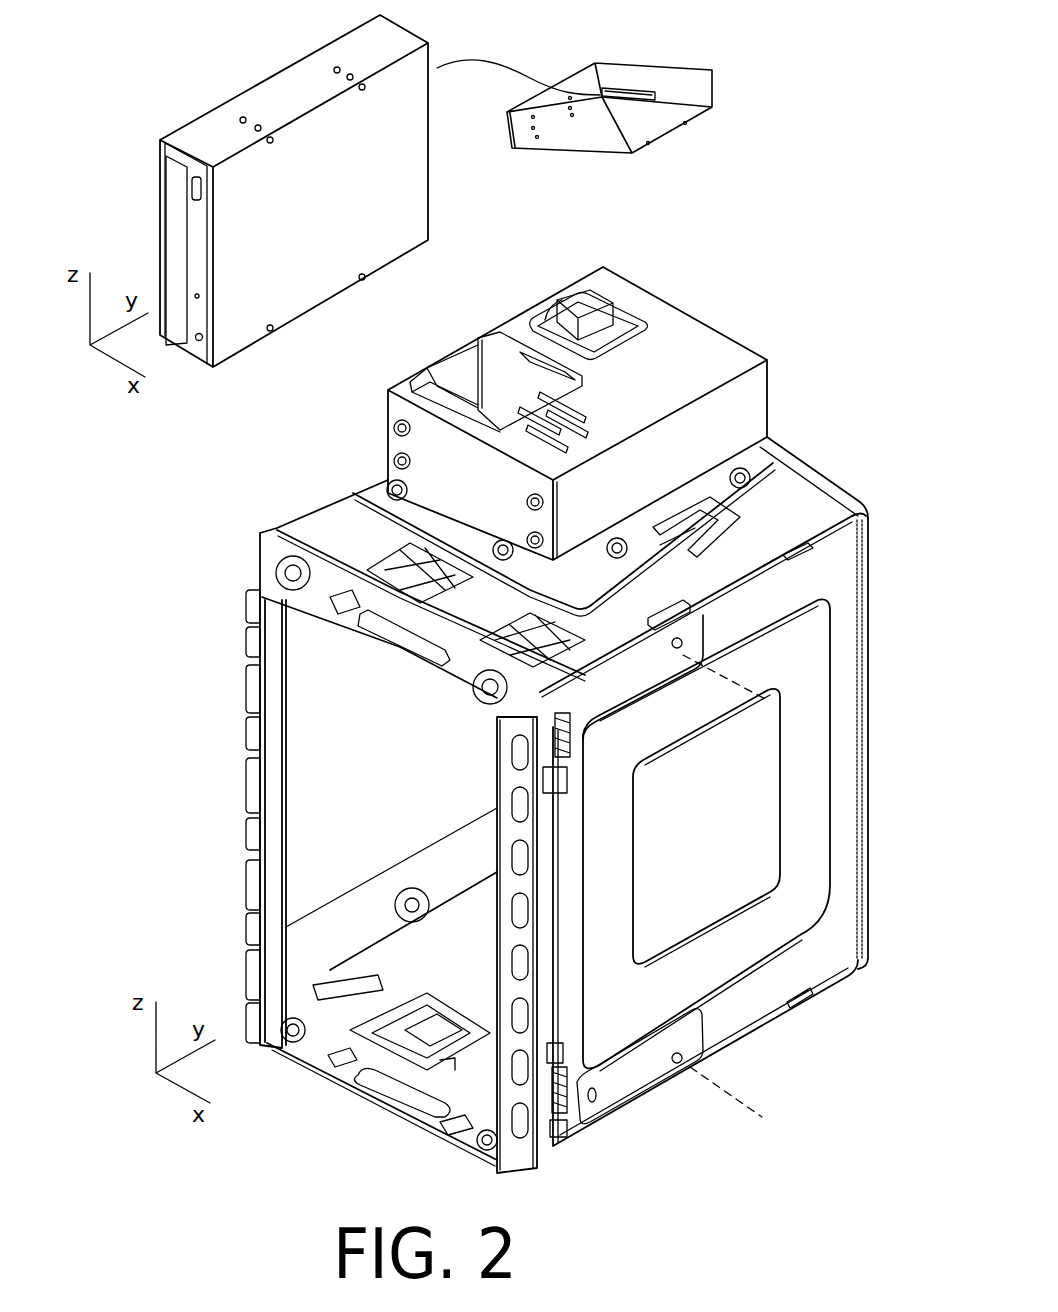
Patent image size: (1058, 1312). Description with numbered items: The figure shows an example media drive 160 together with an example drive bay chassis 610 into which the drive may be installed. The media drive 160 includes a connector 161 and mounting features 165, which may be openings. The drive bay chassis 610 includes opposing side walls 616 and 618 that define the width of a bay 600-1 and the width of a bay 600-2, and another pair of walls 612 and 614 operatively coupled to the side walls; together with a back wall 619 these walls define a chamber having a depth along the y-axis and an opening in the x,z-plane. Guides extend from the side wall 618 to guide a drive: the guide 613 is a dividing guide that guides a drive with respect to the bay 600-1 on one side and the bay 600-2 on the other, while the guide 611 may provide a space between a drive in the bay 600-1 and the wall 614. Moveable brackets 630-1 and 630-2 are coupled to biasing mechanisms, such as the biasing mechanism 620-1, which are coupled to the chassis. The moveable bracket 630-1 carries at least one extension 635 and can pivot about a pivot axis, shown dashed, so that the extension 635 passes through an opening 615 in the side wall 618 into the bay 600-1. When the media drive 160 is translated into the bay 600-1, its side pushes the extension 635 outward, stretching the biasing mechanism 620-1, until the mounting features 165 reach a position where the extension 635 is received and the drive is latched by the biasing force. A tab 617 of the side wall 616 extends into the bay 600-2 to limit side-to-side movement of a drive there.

The media drive 160 is at (234, 191).
The connector 161 is at (630, 97).
The mounting features 165 is at (350, 77).
The drive bay chassis 610 is at (200, 578).
The guide 611 is at (343, 988).
The wall 612 is at (815, 670).
The dividing guide 613 is at (447, 1060).
The wall 614 is at (410, 764).
The opening 615 is at (387, 1040).
The side wall 616 is at (663, 599).
The tab 617 is at (740, 517).
The side wall 618 is at (487, 996).
The back wall 619 is at (807, 475).
The moveable bracket 630-1 is at (617, 1093).
The moveable bracket 630-2 is at (300, 520).
The bay 600-1 is at (323, 722).
The bay 600-2 is at (470, 833).
The biasing mechanism 620-1 is at (570, 1117).
The extension 635 is at (415, 1030).